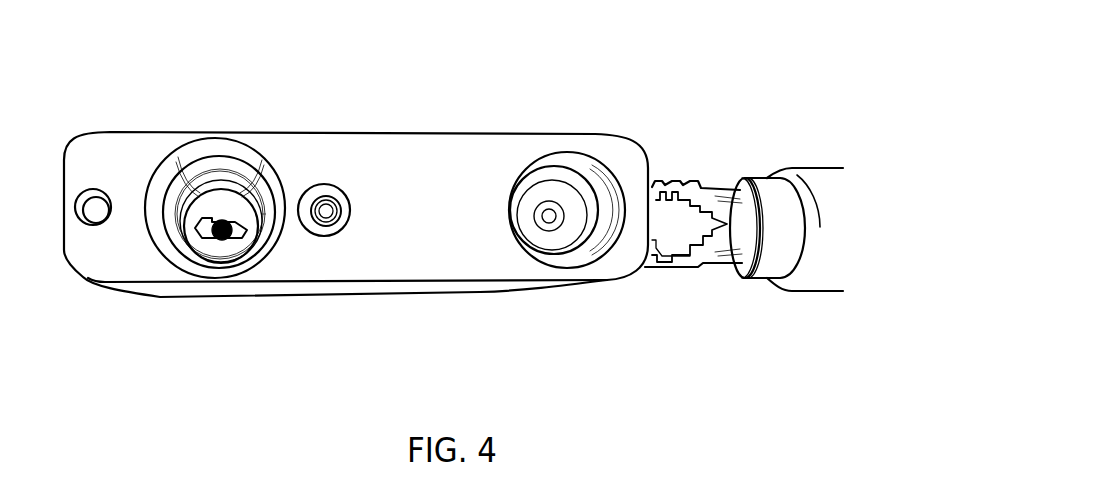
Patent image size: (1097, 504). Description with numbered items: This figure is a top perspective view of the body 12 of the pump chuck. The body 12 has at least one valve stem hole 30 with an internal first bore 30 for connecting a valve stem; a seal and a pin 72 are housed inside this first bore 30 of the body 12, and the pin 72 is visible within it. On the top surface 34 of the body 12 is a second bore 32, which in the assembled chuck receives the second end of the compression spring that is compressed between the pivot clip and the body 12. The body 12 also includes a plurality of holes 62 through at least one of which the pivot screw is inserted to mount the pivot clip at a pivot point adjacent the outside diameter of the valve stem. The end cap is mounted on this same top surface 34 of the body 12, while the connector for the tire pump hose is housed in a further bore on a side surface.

The body 12 is at (453, 196).
The valve stem hole with first bore 30 is at (205, 245).
The second bore 32 is at (552, 247).
The top surface 34 is at (406, 214).
The holes 62 is at (98, 210).
The pin 72 is at (227, 237).